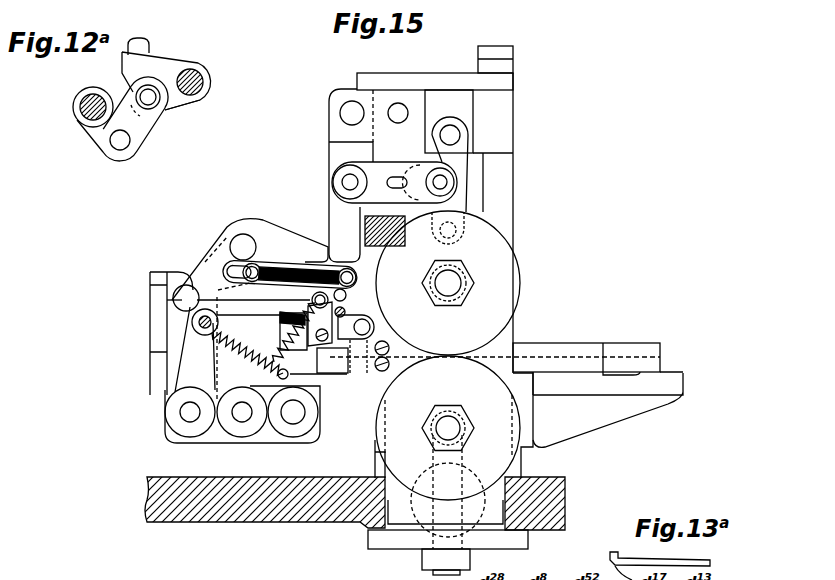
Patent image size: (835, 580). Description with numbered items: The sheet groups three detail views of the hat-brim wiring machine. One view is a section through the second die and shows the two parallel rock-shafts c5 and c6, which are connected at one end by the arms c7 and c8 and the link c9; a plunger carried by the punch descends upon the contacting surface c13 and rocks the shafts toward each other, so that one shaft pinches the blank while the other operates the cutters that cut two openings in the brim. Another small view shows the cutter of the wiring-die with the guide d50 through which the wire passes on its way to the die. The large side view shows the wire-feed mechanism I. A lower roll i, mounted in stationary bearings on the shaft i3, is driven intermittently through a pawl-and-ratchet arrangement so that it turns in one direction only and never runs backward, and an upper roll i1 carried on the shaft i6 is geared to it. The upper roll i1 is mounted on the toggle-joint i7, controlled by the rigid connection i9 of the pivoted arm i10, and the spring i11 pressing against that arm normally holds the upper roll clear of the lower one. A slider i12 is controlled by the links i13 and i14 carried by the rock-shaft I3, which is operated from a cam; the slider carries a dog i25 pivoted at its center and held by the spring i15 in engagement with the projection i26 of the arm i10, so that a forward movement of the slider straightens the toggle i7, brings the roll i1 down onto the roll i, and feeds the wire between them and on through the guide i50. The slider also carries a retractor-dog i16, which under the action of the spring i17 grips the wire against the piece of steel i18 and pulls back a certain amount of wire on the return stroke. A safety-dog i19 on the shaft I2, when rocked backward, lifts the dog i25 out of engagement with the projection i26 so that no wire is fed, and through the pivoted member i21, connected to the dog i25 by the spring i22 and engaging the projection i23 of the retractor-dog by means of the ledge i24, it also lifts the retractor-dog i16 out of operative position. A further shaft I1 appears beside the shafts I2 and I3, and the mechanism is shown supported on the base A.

In FIG. 12A, the rock-shaft c5 is at (73, 107).
In FIG. 12A, the rock-shaft c6 is at (197, 82).
In FIG. 12A, the arm c7 is at (90, 130).
In FIG. 12A, the arm c8 is at (202, 103).
In FIG. 12A, the link c9 is at (143, 130).
In FIG. 12A, the contacting surface c13 is at (148, 48).
In FIG. 15, the wire-feed mechanism I is at (433, 262).
In FIG. 15, the roller I1 is at (297, 416).
In FIG. 15, the shaft I2 is at (242, 420).
In FIG. 15, the rock-shaft I3 is at (183, 412).
In FIG. 15, the base plate A is at (147, 485).
In FIG. 15, the roll i is at (495, 427).
In FIG. 15, the roll i1 is at (503, 276).
In FIG. 15, the shaft i3 is at (448, 420).
In FIG. 15, the shaft i6 is at (450, 280).
In FIG. 15, the toggle-joint i7 is at (473, 158).
In FIG. 15, the rigid connection i9 is at (392, 178).
In FIG. 15, the pivoted arm i10 is at (333, 164).
In FIG. 15, the spring i11 is at (365, 232).
In FIG. 15, the slider i12 is at (172, 330).
In FIG. 15, the link i13 is at (242, 346).
In FIG. 15, the link i14 is at (186, 367).
In FIG. 15, the spring i15 is at (250, 359).
In FIG. 15, the retractor-dog i16 is at (375, 320).
In FIG. 15, the spring i17 is at (328, 338).
In FIG. 15, the piece of steel i18 is at (352, 378).
In FIG. 15, the safety-dog i19 is at (172, 302).
In FIG. 15, the pivoted member i21 is at (352, 290).
In FIG. 15, the spring i22 is at (289, 283).
In FIG. 15, the projection i23 is at (352, 305).
In FIG. 15, the ledge i24 is at (363, 268).
In FIG. 15, the dog i25 is at (240, 242).
In FIG. 15, the projection i26 is at (188, 290).
In FIG. 15, the guide i50 is at (578, 352).
In FIG. 13A, the guide d50 is at (610, 579).